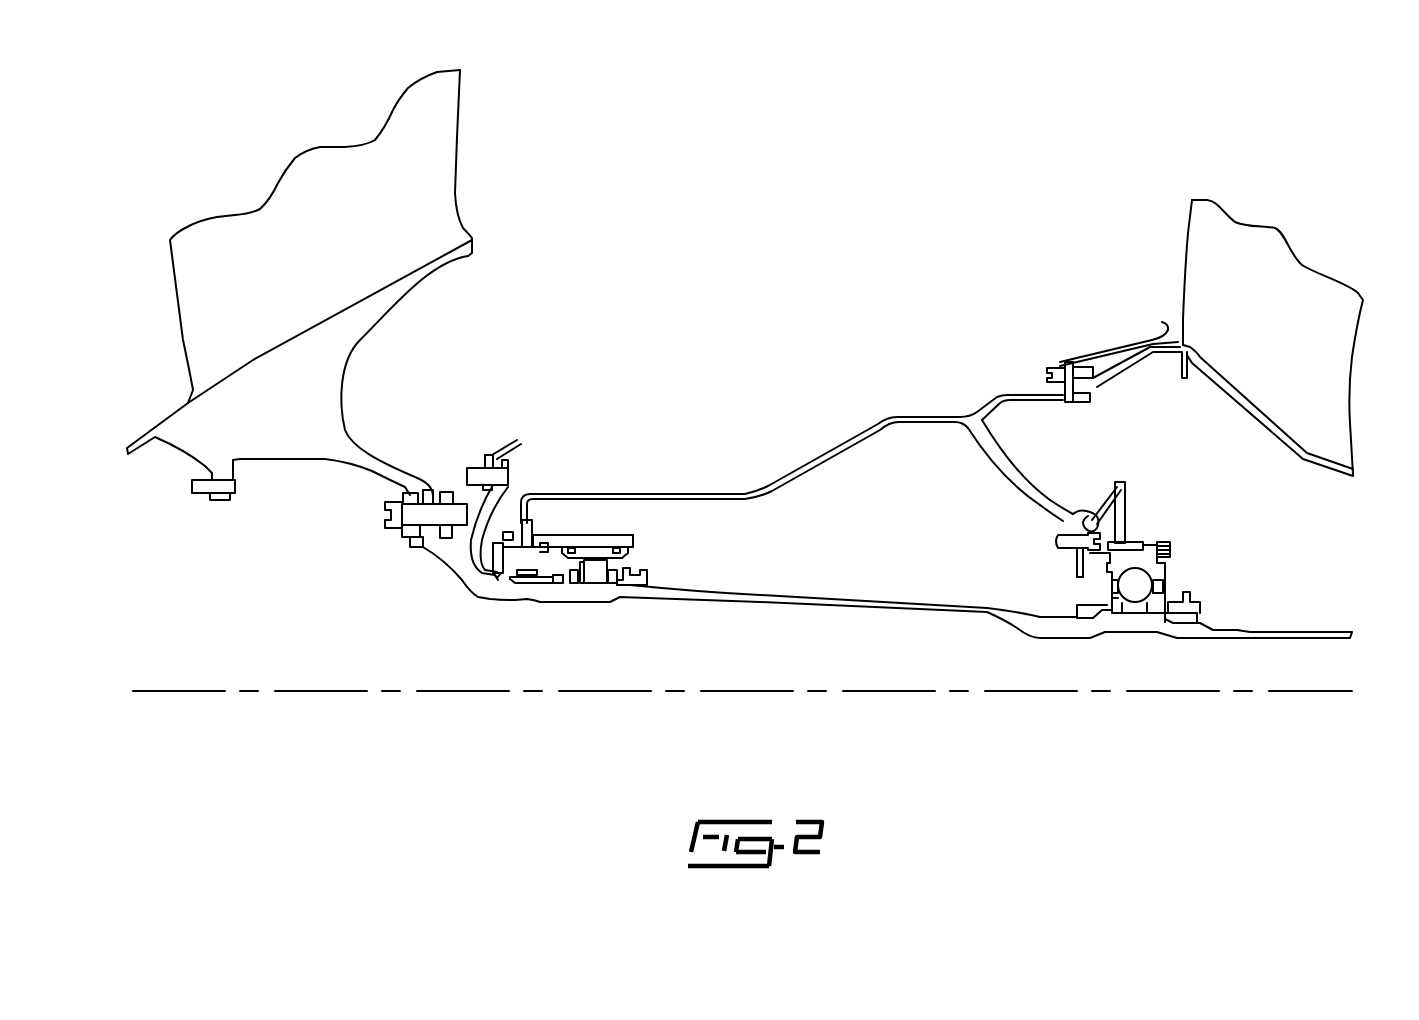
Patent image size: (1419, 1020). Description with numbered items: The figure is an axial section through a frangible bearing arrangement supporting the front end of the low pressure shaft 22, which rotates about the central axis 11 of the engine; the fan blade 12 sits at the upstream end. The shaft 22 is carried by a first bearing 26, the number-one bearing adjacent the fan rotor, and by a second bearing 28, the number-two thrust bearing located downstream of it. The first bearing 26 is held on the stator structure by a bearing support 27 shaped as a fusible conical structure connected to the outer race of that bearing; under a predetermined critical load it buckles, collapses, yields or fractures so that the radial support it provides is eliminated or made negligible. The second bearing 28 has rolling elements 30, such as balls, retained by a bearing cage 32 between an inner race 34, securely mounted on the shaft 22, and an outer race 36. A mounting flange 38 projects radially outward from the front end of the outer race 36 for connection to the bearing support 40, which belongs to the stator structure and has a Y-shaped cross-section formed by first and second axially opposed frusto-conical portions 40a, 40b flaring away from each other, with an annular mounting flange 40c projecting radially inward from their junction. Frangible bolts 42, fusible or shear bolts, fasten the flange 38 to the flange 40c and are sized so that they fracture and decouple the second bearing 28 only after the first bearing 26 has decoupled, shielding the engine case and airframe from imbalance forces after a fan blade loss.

The central axis 11 is at (1233, 693).
The fan blade 12 is at (440, 125).
The low pressure shaft 22 is at (817, 605).
The first bearing 26 is at (592, 565).
The bearing support 27 is at (680, 492).
The second bearing 28 is at (1172, 533).
The rolling elements 30 is at (1147, 585).
The bearing cage 32 is at (1112, 586).
The inner race 34 is at (1147, 612).
The outer race 36 is at (1153, 562).
The mounting flange 38 is at (1093, 517).
The bearing support 40 is at (988, 480).
The first frusto-conical portion 40a is at (1023, 490).
The second frusto-conical portion 40b is at (1090, 517).
The annular mounting flange 40c is at (1073, 558).
The frangible bolts 42 is at (1065, 537).